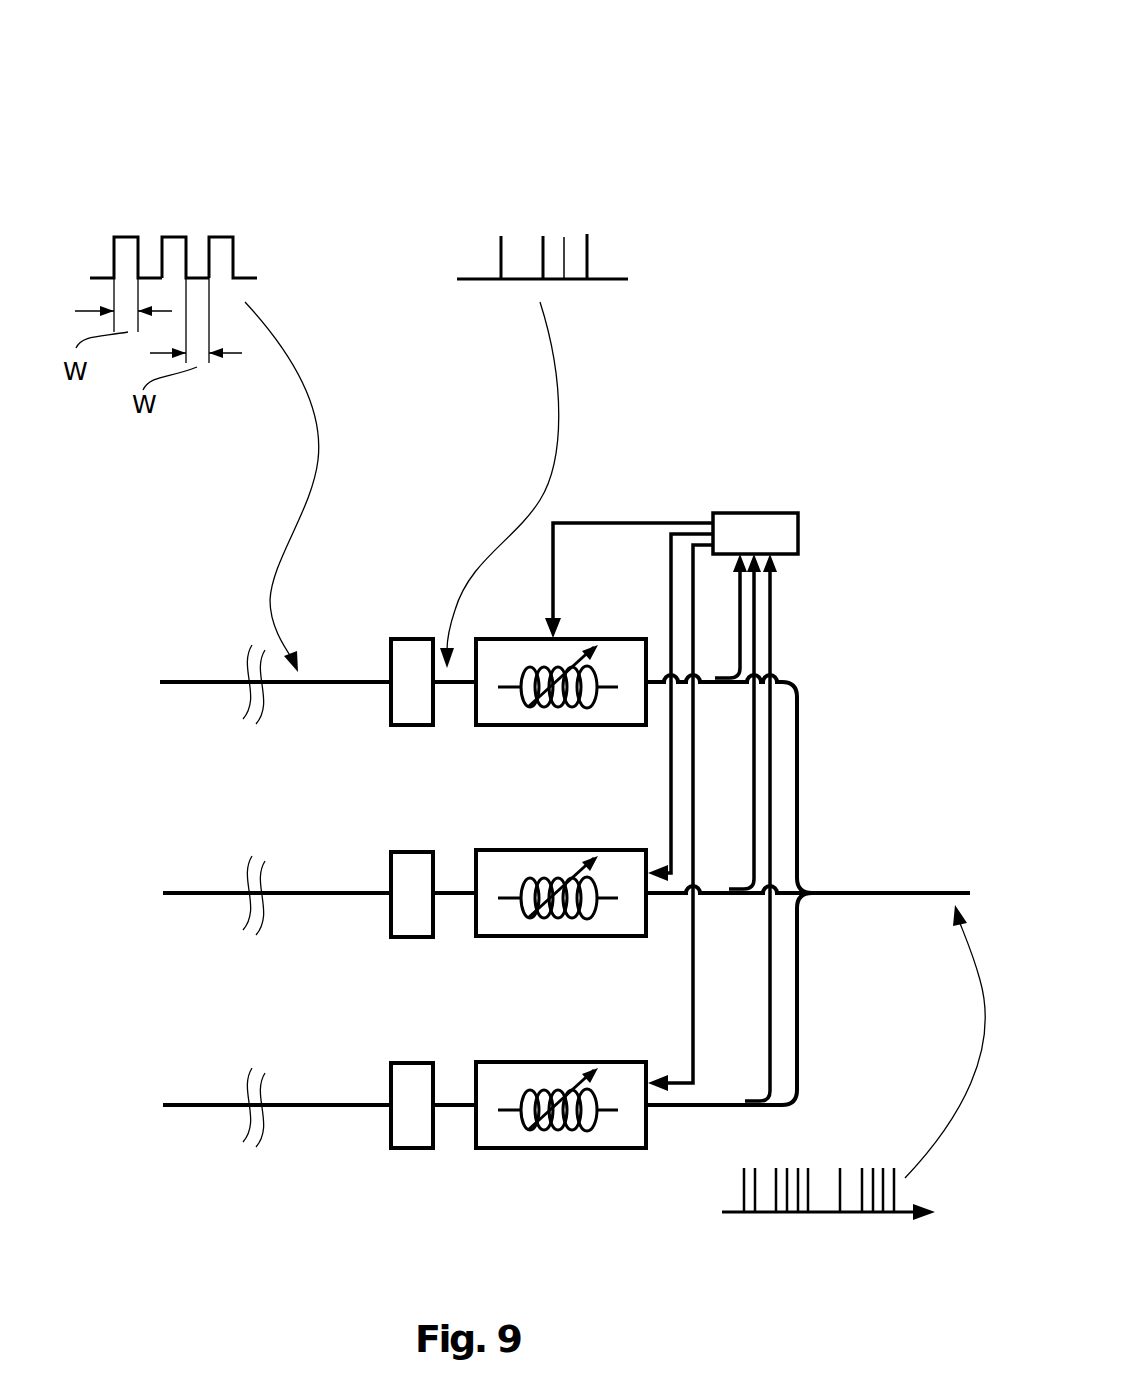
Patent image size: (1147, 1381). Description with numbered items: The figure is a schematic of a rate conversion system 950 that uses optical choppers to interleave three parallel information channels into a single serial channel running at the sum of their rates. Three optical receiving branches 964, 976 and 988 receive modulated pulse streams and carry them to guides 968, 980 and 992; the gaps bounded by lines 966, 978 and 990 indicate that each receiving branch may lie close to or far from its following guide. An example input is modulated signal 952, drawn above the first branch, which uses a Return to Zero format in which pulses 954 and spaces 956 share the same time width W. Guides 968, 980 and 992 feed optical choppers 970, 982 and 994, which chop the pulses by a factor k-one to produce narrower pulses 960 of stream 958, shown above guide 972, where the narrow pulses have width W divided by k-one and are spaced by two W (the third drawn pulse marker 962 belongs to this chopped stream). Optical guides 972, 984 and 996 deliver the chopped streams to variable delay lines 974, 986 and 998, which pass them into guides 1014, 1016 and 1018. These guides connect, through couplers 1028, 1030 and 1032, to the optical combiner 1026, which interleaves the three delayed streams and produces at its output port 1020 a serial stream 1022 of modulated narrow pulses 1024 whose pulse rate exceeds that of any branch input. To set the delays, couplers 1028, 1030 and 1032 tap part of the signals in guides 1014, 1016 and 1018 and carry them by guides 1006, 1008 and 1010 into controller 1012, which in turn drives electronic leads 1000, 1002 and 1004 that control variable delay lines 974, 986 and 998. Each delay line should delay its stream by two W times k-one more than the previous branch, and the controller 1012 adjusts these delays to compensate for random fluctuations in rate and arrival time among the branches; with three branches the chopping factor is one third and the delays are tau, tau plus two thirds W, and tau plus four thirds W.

The system 950 is at (402, 88).
The modulated signal 952 is at (97, 278).
The pulses 954 is at (167, 237).
The spaces 956 is at (200, 278).
The stream 958 is at (617, 277).
The pulses 960 is at (503, 258).
The optical pulse 962 is at (563, 240).
The optical receiving branch 964 is at (182, 682).
The line 966 is at (258, 615).
The guide 968 is at (342, 682).
The optical chopper 970 is at (417, 638).
The optical guide 972 is at (443, 684).
The variable delay line 974 is at (597, 727).
The optical receiving branch 976 is at (192, 893).
The line 978 is at (263, 830).
The guide 980 is at (352, 893).
The optical chopper 982 is at (403, 852).
The optical guide 984 is at (465, 895).
The variable delay line 986 is at (607, 937).
The optical receiving branch 988 is at (183, 1105).
The line 990 is at (260, 1040).
The guide 992 is at (355, 1105).
The optical chopper 994 is at (415, 1063).
The optical guide 996 is at (443, 1107).
The variable delay line 998 is at (593, 1148).
The lead 1000 is at (577, 522).
The lead 1002 is at (670, 545).
The lead 1004 is at (690, 755).
The guide 1006 is at (741, 592).
The guide 1008 is at (752, 803).
The guide 1010 is at (767, 957).
The controller 1012 is at (755, 513).
The guide 1014 is at (802, 776).
The guide 1016 is at (670, 898).
The guide 1018 is at (802, 995).
The output port 1020 is at (862, 897).
The serial stream 1022 is at (733, 1212).
The modulated narrow pulses 1024 is at (838, 1187).
The optical combiner 1026 is at (818, 893).
The coupler 1028 is at (722, 690).
The coupler 1030 is at (738, 897).
The coupler 1032 is at (758, 1093).